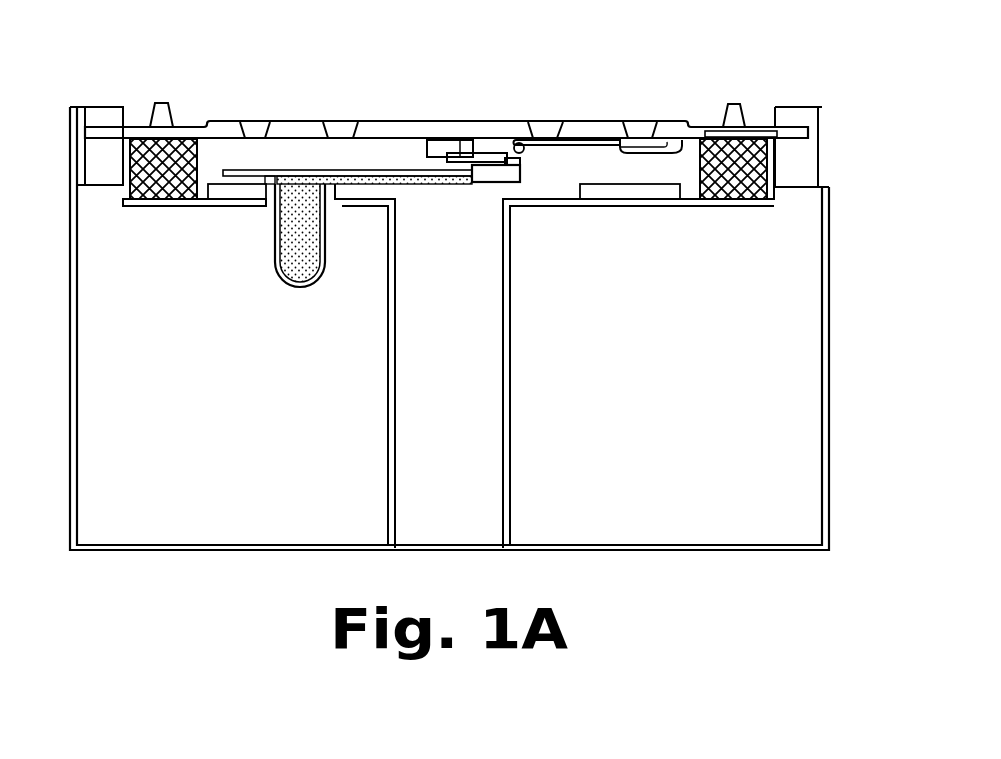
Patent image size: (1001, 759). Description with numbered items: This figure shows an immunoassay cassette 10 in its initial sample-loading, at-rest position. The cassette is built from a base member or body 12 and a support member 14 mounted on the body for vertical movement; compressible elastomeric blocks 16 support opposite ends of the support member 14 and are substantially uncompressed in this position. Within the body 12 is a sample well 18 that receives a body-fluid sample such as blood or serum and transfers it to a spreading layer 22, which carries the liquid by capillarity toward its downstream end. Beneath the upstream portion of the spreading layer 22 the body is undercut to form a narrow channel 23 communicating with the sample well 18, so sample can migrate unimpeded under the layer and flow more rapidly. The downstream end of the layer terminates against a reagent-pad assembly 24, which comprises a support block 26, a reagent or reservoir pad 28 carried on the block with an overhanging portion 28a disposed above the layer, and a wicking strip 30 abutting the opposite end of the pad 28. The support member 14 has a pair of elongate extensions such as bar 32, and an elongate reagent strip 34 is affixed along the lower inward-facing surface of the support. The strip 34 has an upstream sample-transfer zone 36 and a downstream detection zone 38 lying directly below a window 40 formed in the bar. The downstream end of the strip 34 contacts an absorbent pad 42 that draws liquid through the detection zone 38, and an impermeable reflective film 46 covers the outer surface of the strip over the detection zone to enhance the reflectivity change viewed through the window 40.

The immunoassay cassette 10 is at (838, 90).
The base member or body 12 is at (800, 387).
The support member 14 is at (289, 128).
The compressible blocks 16 is at (130, 167).
The sample well 18 is at (302, 273).
The spreading layer 22 is at (350, 170).
The channel 23 is at (376, 190).
The reagent-pad assembly 24 is at (590, 150).
The support block 26 is at (493, 180).
The reagent or reservoir pad 28 is at (476, 153).
The overhanging portion 28a is at (440, 140).
The wicking strip 30 is at (512, 157).
The bar 32 is at (767, 127).
The reagent strip 34 is at (606, 140).
The sample-transfer zone 36 is at (521, 143).
The detection zone 38 is at (573, 140).
The window 40 is at (548, 135).
The absorbent pad 42 is at (668, 140).
The impermeable reflective film 46 is at (530, 172).